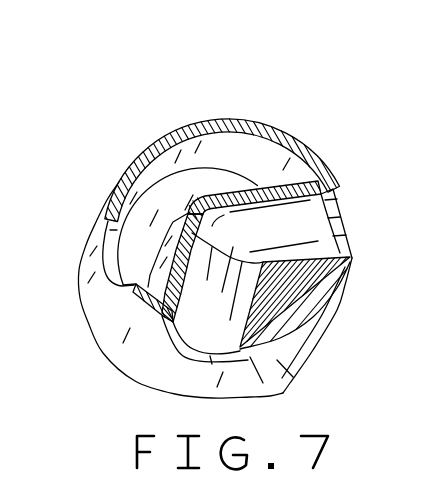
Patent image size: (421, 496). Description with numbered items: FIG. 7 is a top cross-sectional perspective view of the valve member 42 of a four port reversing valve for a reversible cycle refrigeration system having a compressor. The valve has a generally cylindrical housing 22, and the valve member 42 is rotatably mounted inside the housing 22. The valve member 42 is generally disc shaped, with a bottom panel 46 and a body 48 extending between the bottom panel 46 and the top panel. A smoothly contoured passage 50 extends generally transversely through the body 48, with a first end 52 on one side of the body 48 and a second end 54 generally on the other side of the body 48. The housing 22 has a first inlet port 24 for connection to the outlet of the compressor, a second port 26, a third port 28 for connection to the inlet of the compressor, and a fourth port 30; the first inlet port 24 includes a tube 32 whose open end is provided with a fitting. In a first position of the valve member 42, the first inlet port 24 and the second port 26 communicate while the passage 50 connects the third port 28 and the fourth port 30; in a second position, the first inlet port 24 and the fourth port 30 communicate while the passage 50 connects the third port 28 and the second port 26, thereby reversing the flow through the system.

The housing 22 is at (257, 383).
The first inlet port 24 is at (100, 227).
The second port 26 is at (143, 160).
The third port 28 is at (327, 203).
The fourth port 30 is at (233, 360).
The tube 32 is at (323, 130).
The valve member 42 is at (313, 300).
The bottom panel 46 is at (128, 246).
The body 48 is at (240, 188).
The passage 50 is at (262, 237).
The first end 52 is at (340, 243).
The second end 54 is at (177, 353).